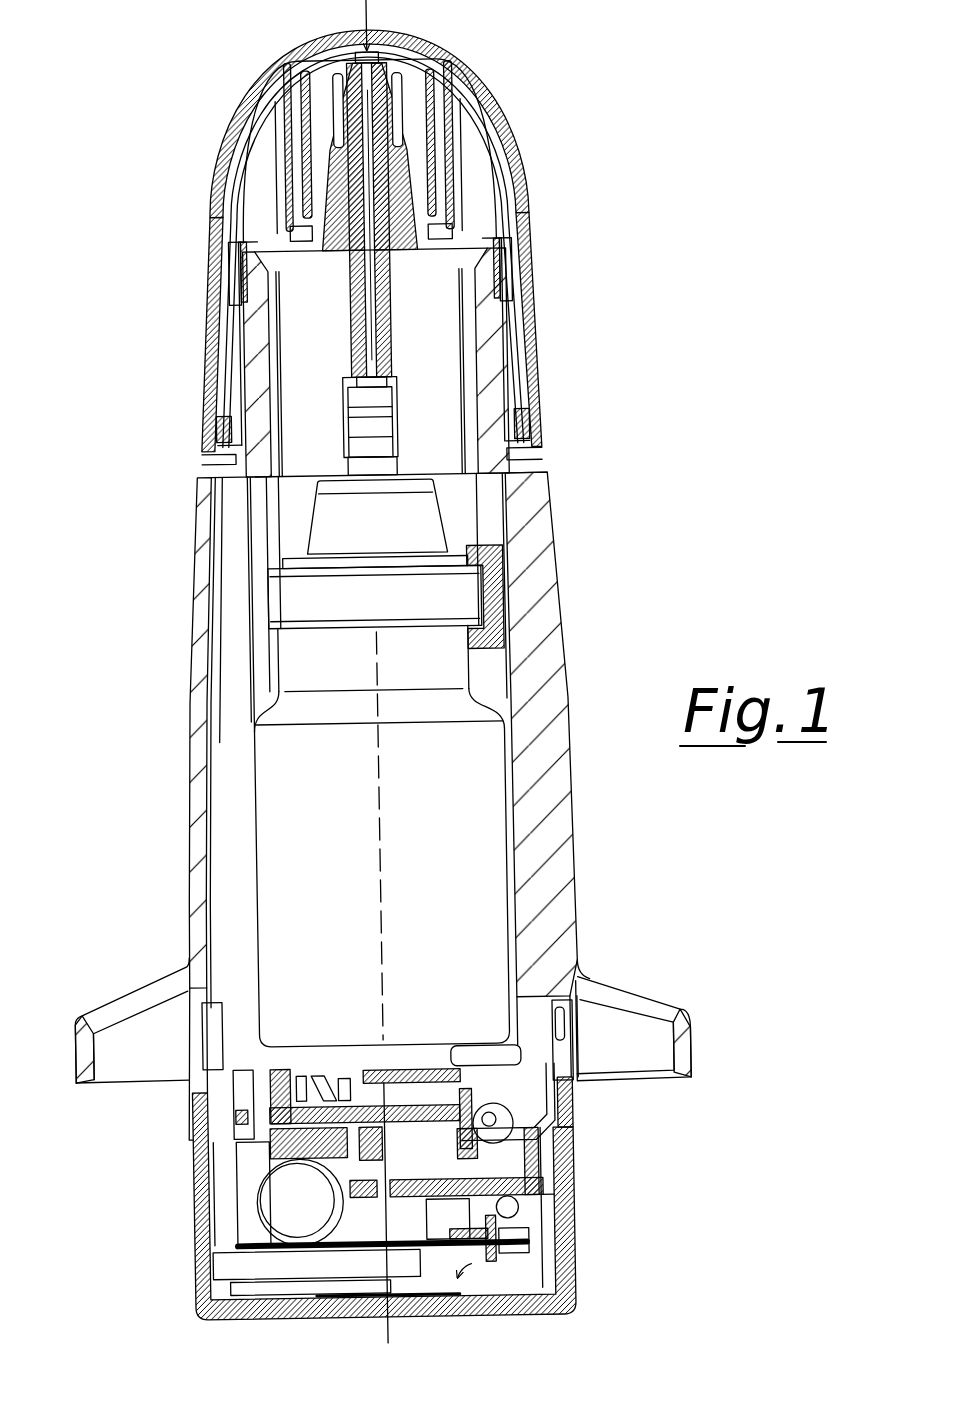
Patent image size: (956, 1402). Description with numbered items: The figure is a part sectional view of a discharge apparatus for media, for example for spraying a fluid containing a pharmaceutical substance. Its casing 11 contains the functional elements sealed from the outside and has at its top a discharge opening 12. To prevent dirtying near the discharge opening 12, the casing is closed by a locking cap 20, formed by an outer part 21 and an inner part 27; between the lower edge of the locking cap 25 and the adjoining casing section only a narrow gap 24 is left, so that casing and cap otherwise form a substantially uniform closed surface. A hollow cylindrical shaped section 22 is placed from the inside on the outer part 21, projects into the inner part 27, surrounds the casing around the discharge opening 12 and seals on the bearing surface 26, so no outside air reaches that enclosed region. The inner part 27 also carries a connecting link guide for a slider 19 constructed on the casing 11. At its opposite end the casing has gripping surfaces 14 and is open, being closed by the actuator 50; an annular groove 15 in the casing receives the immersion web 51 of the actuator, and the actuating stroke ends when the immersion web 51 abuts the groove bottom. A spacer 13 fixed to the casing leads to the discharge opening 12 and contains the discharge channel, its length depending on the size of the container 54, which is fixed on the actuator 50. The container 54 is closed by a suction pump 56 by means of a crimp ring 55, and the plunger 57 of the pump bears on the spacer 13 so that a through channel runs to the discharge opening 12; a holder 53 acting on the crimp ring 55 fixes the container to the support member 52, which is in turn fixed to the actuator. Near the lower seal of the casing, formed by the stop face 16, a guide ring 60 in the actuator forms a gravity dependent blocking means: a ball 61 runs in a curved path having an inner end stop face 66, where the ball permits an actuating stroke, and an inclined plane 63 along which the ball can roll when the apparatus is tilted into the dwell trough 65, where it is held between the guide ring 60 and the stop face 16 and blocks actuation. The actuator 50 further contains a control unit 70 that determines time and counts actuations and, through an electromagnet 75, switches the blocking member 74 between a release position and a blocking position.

The casing 11 is at (545, 679).
The discharge opening 12 is at (380, 33).
The spacer 13 is at (397, 322).
The gripping surfaces 14 is at (128, 986).
The annular groove 15 is at (594, 977).
The stop face 16 is at (561, 1066).
The slider 19 is at (541, 376).
The locking cap 20 is at (538, 243).
The outer part 21 is at (216, 339).
The shaped section 22 is at (327, 78).
The gap 24 is at (201, 449).
The lower edge of the locking cap 25 is at (554, 462).
The bearing surface 26 is at (498, 184).
The inner part 27 is at (253, 116).
The actuator 50 is at (550, 1210).
The immersion web 51 is at (565, 1166).
The support member 52 is at (505, 694).
The holder 53 is at (507, 564).
The container 54 is at (457, 771).
The crimp ring 55 is at (336, 610).
The suction pump 56 is at (418, 511).
The plunger 57 is at (360, 464).
The guide ring 60 is at (274, 1068).
The ball 61 is at (468, 1065).
The inclined plane 63 is at (494, 1062).
The dwell trough 65 is at (564, 1095).
The stop face 66 is at (426, 1068).
The control unit 70 is at (223, 1184).
The blocking member 74 is at (338, 1086).
The electromagnet 75 is at (466, 1274).